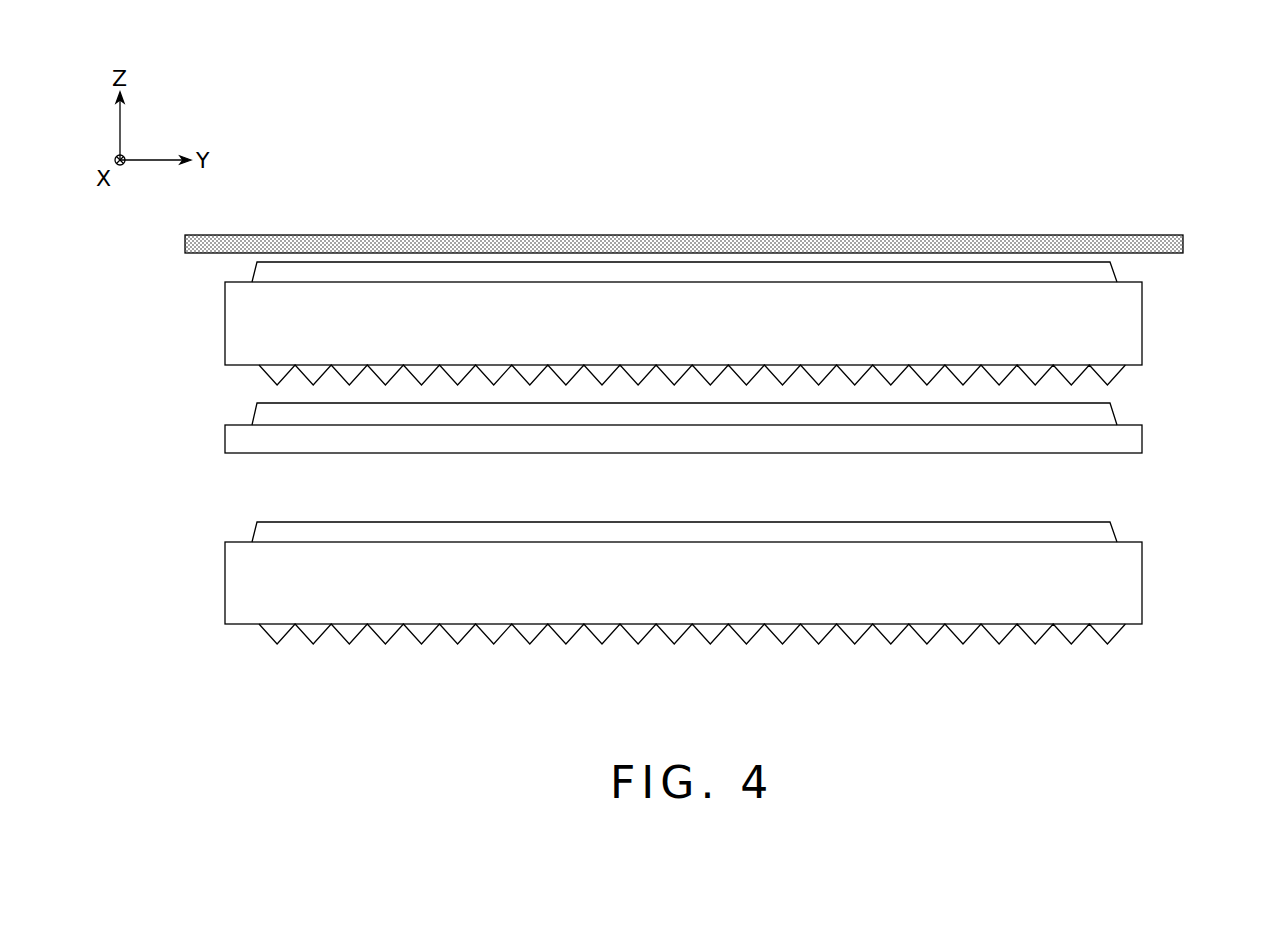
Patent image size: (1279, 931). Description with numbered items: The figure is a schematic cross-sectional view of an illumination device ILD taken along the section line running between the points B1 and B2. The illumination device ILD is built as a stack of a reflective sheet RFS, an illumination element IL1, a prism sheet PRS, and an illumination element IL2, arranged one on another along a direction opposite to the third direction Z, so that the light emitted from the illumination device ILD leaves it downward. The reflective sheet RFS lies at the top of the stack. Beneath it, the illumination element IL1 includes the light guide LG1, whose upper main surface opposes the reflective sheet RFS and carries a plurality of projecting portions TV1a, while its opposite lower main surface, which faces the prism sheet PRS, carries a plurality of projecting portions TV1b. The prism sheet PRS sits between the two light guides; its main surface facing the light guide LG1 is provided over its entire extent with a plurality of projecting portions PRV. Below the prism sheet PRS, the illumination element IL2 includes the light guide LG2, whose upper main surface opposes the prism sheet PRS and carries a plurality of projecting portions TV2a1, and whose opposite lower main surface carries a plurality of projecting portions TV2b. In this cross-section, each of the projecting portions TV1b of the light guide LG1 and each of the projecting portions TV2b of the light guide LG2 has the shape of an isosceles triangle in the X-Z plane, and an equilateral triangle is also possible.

The illumination device ILD is at (1159, 131).
The reflective sheet RFS is at (1120, 245).
The projecting portions TV1a is at (582, 273).
The light guide LG1 is at (352, 318).
The projecting portions TV1b is at (272, 373).
The illumination element IL1 is at (689, 287).
The projecting portions PRV is at (265, 415).
The prism sheet PRS is at (237, 438).
The projecting portions TV2a1 is at (252, 535).
The light guide LG2 is at (355, 585).
The projecting portions TV2b is at (272, 632).
The illumination element IL2 is at (675, 565).
The line B1-B2 end point B1 is at (136, 715).
The line B1-B2 end point B2 is at (1179, 719).